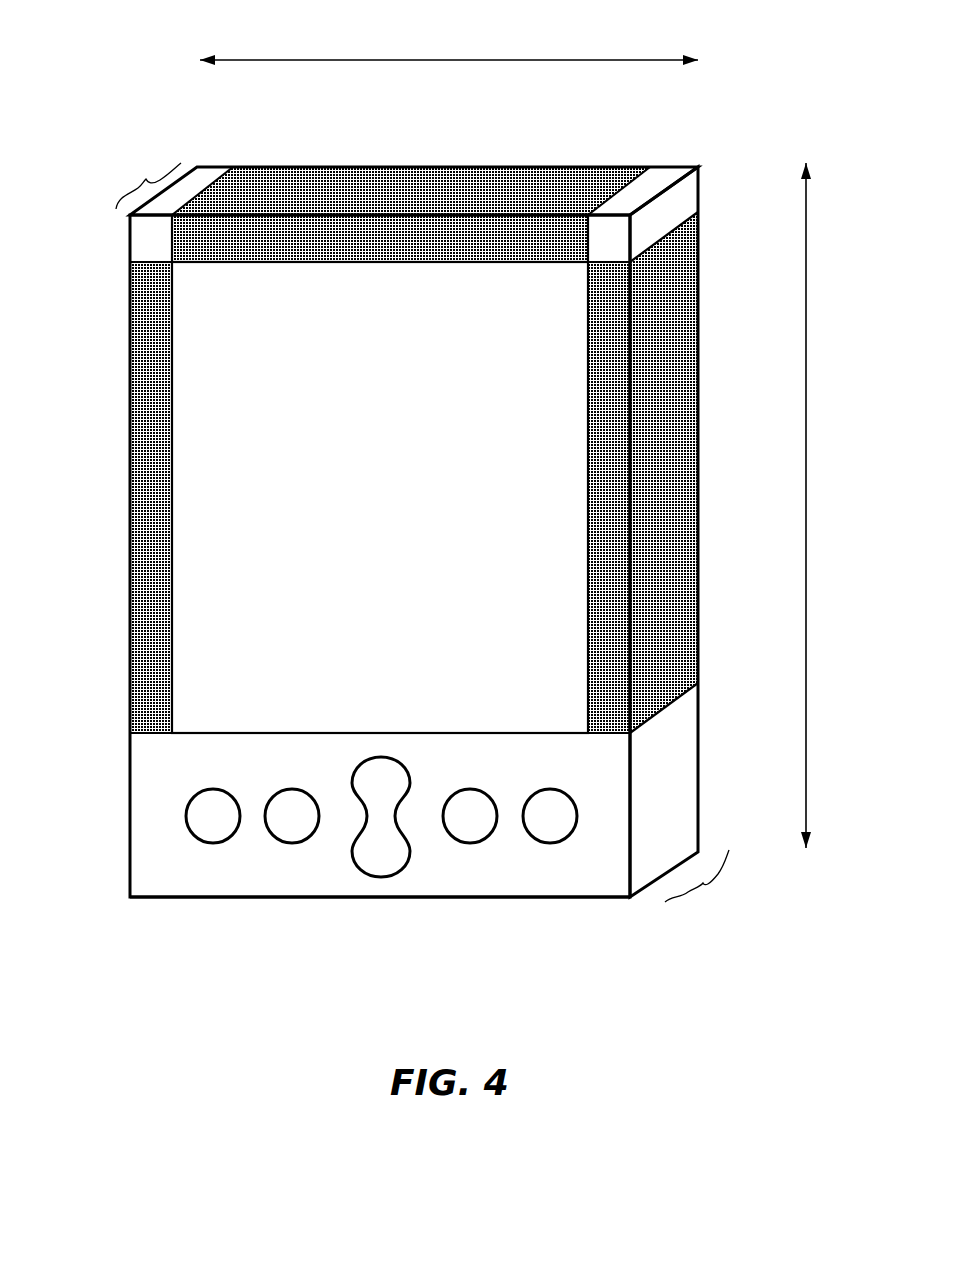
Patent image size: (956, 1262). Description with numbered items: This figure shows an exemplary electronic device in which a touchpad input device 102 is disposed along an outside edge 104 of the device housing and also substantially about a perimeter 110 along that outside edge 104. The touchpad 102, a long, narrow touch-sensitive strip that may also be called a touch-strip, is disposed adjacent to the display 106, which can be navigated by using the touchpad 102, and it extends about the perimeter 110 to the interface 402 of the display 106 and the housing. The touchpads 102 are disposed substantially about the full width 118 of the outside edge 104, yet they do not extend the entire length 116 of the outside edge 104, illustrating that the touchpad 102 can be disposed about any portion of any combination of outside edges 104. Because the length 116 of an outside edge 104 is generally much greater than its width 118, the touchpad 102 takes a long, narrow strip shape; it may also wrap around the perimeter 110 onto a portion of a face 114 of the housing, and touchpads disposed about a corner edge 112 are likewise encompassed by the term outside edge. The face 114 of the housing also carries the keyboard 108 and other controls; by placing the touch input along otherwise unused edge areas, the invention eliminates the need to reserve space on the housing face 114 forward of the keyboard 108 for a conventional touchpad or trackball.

The touchpad input device 102 is at (388, 235).
The outside edge 104 is at (648, 190).
The display 106 is at (240, 402).
The keyboard 108 is at (282, 827).
The perimeter 110 is at (287, 215).
The corner edge 112 is at (192, 190).
The face 114 is at (457, 890).
The length 116 is at (440, 60).
The width 118 is at (429, 528).
The interface 402 is at (590, 568).